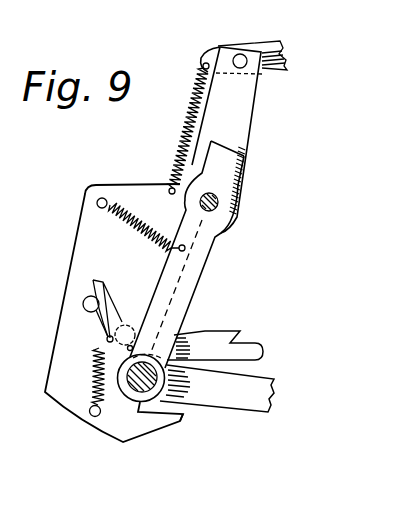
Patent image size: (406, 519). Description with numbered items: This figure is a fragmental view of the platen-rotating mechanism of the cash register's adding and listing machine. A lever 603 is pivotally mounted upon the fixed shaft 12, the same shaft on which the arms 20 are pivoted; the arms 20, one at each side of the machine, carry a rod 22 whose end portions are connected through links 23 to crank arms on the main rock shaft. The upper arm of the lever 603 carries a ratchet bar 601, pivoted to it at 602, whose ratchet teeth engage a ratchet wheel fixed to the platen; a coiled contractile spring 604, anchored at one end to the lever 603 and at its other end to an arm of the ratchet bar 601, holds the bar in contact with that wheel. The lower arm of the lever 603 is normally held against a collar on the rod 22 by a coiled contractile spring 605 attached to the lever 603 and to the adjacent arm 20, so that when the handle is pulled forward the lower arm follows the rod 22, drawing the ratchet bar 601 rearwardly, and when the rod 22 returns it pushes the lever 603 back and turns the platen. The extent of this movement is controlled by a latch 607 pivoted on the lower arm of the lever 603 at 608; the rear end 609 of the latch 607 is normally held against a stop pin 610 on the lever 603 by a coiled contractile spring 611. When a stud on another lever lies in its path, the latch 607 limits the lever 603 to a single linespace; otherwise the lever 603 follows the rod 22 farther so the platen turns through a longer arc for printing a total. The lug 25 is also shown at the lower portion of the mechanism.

The fixed shaft 12 is at (217, 202).
The arm 20 is at (193, 275).
The rod 22 is at (144, 393).
The link 23 is at (250, 397).
The stop lug 25 is at (167, 436).
The ratchet bar 601 is at (285, 45).
The pivot 602 is at (240, 61).
The lever 603 is at (252, 115).
The coiled contractile spring 604 is at (187, 117).
The coiled contractile spring 605 is at (110, 224).
The latch 607 is at (253, 343).
The pivot 608 is at (138, 323).
The rear end of latch 609 is at (93, 287).
The stop pin 610 is at (86, 310).
The coiled contractile spring 611 is at (96, 378).